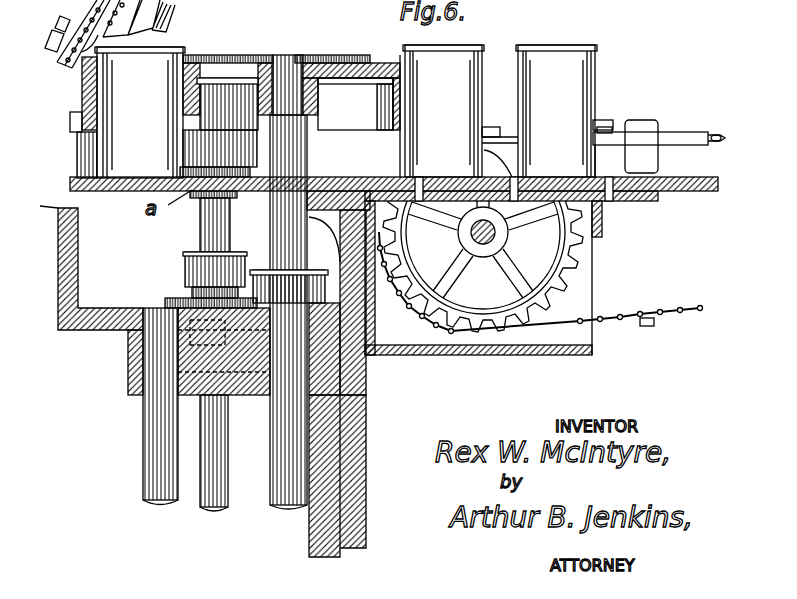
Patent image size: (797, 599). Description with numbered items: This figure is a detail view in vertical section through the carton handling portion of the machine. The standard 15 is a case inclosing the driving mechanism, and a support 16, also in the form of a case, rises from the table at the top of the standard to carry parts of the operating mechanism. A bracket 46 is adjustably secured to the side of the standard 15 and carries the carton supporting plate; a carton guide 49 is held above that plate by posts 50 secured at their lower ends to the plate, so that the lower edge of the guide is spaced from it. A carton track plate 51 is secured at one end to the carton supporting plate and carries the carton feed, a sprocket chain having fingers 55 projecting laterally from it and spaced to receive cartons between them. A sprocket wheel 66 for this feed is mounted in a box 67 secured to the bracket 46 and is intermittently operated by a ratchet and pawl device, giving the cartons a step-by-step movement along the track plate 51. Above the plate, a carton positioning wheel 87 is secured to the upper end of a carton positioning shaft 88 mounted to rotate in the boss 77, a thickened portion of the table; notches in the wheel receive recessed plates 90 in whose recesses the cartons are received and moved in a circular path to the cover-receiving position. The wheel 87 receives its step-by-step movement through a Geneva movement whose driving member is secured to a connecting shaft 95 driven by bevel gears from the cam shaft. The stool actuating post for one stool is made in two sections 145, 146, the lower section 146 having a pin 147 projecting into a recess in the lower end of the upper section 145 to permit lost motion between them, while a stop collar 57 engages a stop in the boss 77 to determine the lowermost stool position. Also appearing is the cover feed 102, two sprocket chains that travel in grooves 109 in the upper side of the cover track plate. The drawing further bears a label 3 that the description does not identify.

The cover feed 102 is at (62, 27).
The grooves 109 is at (58, 48).
The posts 50 is at (83, 100).
The carton guide 49 is at (84, 106).
The drum 3 is at (112, 150).
The carton positioning wheel 87 is at (318, 72).
The carton positioning shaft 88 is at (300, 160).
The recessed plates 90 is at (357, 126).
The fingers 55 is at (600, 120).
The carton track plate 51 is at (690, 183).
The sprocket wheel 66 is at (563, 267).
The box 67 is at (452, 350).
The support 16 is at (64, 233).
The upper section of stool actuating post 145 is at (206, 228).
The stop collar 57 is at (192, 265).
The pin 147 is at (167, 304).
The boss 77 is at (136, 372).
The connecting shaft 95 is at (152, 418).
The bracket 46 is at (355, 390).
The standard 15 is at (330, 480).
The lower section of stool actuating post 146 is at (222, 506).